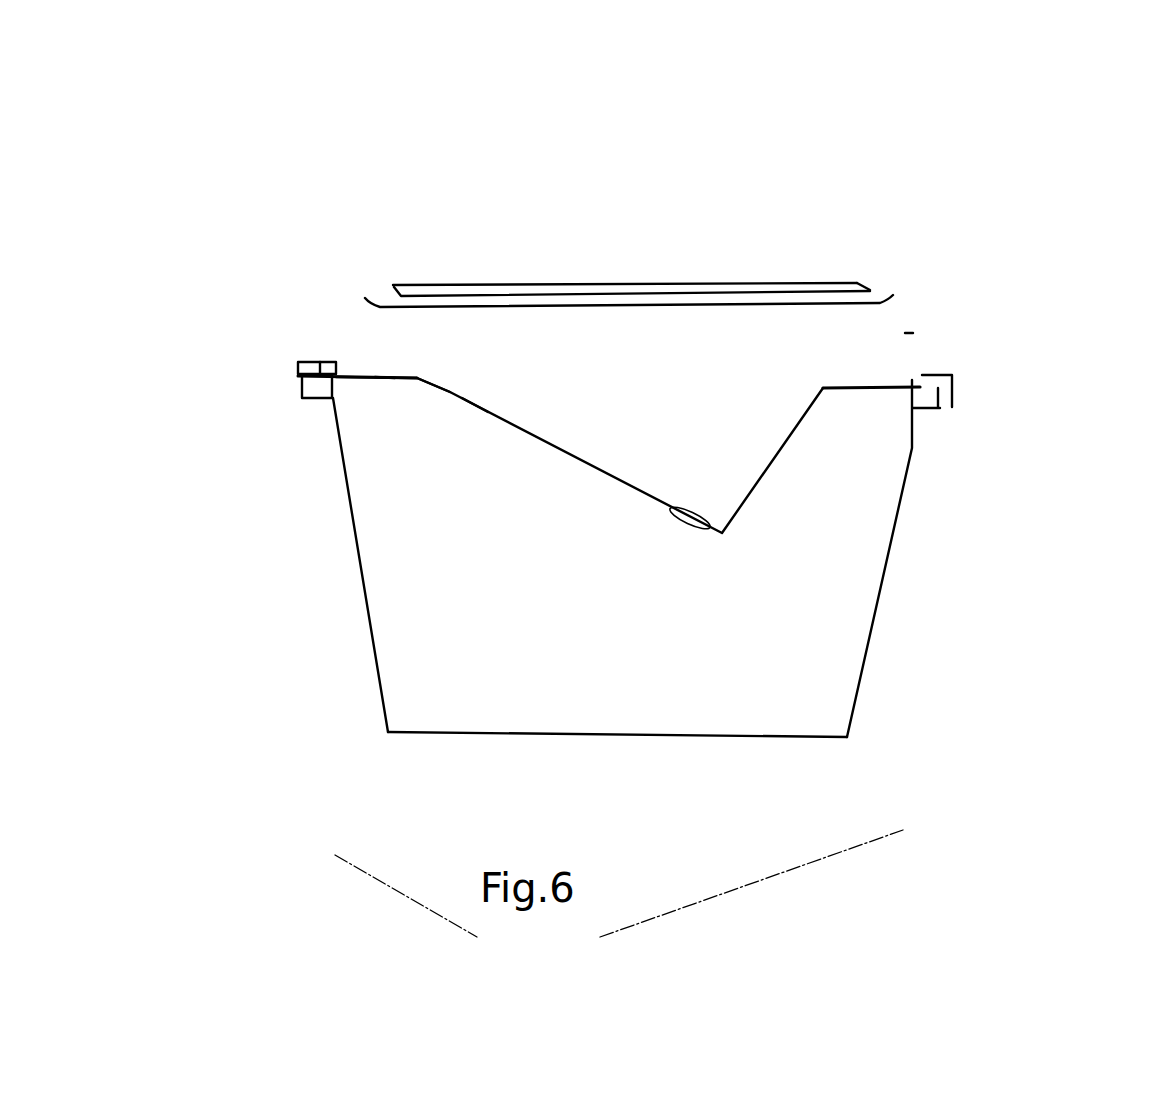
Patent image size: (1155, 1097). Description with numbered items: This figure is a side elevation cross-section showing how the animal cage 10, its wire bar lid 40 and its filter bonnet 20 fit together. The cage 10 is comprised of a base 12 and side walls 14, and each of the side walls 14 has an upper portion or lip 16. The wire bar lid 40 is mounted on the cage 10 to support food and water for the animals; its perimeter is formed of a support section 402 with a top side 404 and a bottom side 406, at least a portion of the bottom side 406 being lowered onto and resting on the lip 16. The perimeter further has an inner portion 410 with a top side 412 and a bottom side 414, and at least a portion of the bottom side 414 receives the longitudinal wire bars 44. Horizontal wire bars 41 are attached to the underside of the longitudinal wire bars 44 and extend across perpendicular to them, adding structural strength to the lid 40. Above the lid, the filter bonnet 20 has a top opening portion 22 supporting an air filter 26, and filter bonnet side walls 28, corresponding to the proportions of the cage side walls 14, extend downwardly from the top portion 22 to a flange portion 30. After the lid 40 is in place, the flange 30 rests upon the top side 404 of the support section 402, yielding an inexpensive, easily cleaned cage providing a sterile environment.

The animal cage 10 is at (934, 607).
The base 12 is at (733, 737).
The side walls 14 is at (890, 538).
The lip 16 is at (305, 392).
The filter bonnet 20 is at (753, 257).
The top opening portion 22 is at (667, 302).
The air filter 26 is at (570, 287).
The filter bonnet side walls 28 is at (910, 333).
The flange portion 30 is at (304, 362).
The wire bar lid 40 is at (450, 391).
The horizontal wire bars 41 is at (385, 380).
The longitudinal wire bars 44 is at (475, 410).
The support section 402 is at (298, 370).
The top side 404 is at (320, 362).
The bottom side 406 is at (298, 385).
The inner portion 410 is at (342, 375).
The top side 412 is at (337, 365).
The bottom side 414 is at (330, 398).